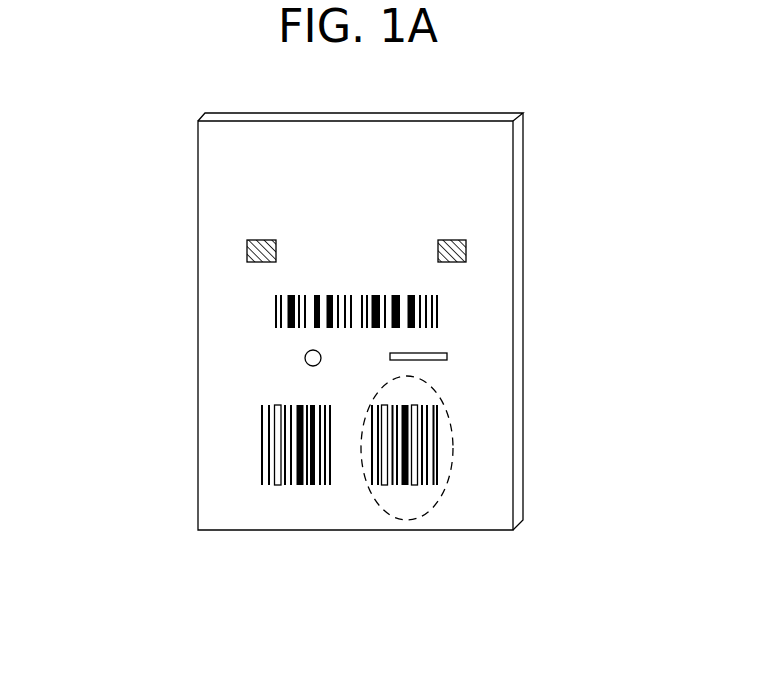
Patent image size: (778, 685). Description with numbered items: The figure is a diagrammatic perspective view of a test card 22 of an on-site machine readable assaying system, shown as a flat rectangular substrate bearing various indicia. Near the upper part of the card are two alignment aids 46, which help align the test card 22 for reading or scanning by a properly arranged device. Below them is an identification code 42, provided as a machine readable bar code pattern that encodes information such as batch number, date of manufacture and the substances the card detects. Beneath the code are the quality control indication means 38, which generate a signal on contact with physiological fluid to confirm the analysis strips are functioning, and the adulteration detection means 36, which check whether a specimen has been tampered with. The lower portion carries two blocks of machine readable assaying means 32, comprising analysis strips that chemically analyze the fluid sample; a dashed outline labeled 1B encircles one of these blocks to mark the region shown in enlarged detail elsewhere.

The test card 22 is at (146, 508).
The alignment aids 46 is at (467, 251).
The identification code 42 is at (272, 320).
The quality control indication means 38 is at (305, 357).
The adulteration detection means 36 is at (447, 353).
The machine readable assaying means 32 is at (328, 490).
The detail region of FIG. 1B is at (445, 493).